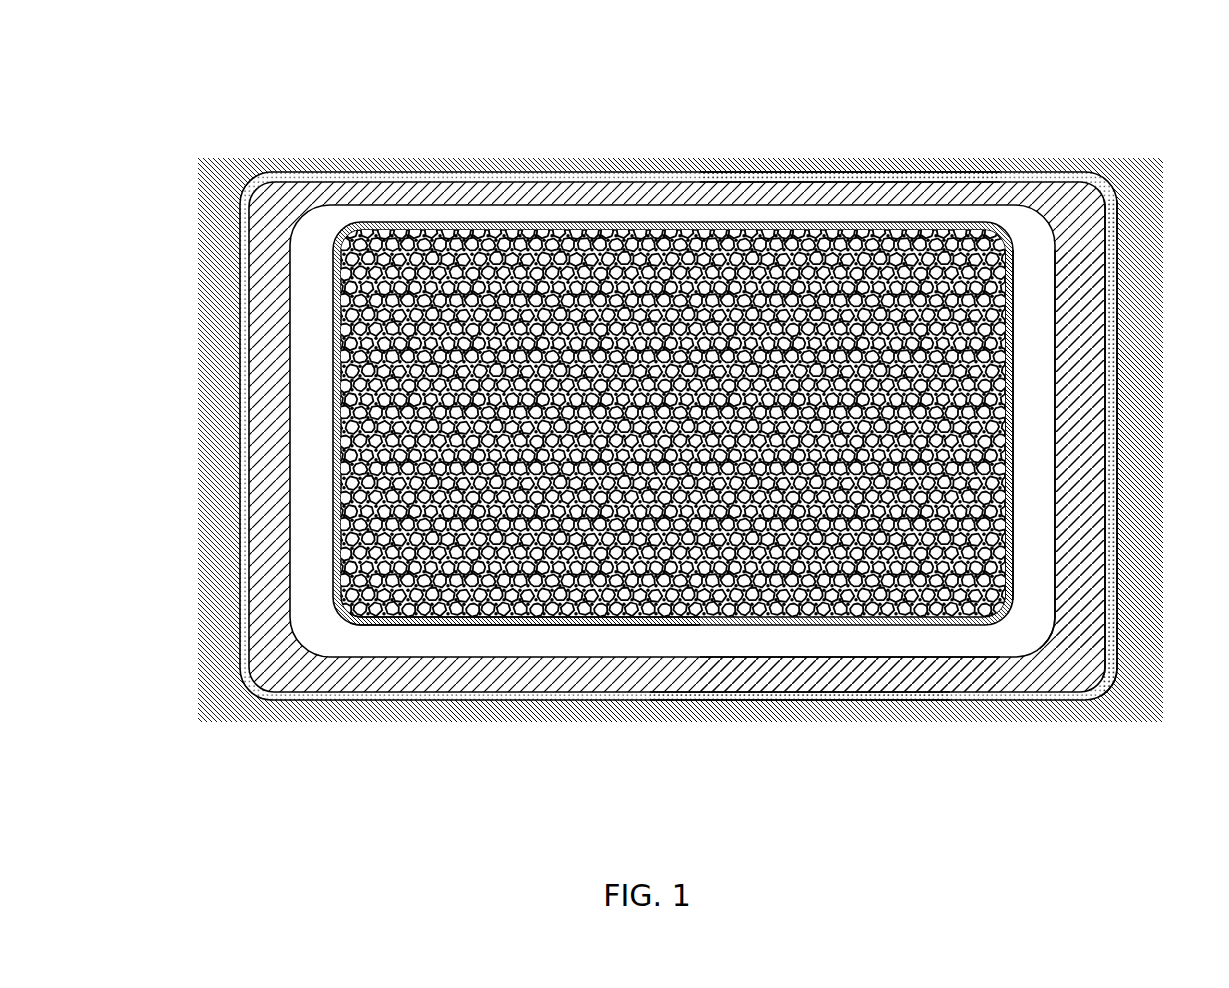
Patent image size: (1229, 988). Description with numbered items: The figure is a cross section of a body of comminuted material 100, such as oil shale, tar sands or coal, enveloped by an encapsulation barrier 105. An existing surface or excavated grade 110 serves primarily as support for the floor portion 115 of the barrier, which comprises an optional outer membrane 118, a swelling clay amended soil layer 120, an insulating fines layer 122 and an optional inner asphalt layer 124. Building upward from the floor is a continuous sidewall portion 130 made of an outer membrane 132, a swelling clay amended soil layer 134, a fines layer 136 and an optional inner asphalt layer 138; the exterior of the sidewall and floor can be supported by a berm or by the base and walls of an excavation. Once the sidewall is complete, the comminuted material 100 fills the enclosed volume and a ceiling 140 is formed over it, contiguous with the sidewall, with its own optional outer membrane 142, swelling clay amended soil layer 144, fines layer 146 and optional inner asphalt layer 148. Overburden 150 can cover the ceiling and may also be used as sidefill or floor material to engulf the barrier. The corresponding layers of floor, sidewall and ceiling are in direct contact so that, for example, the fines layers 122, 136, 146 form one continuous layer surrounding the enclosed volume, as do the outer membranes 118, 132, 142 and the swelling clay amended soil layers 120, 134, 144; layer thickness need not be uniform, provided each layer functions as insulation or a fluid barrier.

The comminuted material 100 is at (663, 600).
The encapsulation barrier 105 is at (711, 413).
The existing surface or excavated grade 110 is at (1040, 713).
The floor portion 115 is at (526, 708).
The outer membrane 118 is at (778, 700).
The swelling clay amended soil layer 120 is at (860, 677).
The insulating fines layer 122 is at (930, 643).
The inner asphalt layer 124 is at (403, 624).
The sidewall portion 130 is at (1142, 499).
The outer membrane 132 is at (1118, 258).
The swelling clay amended soil layer 134 is at (1085, 318).
The fines layer 136 is at (1047, 375).
The inner asphalt layer 138 is at (1020, 422).
The ceiling 140 is at (476, 168).
The outer membrane 142 is at (825, 173).
The swelling clay amended soil layer 144 is at (880, 190).
The fines layer 146 is at (933, 215).
The inner asphalt layer 148 is at (985, 225).
The overburden 150 is at (750, 158).